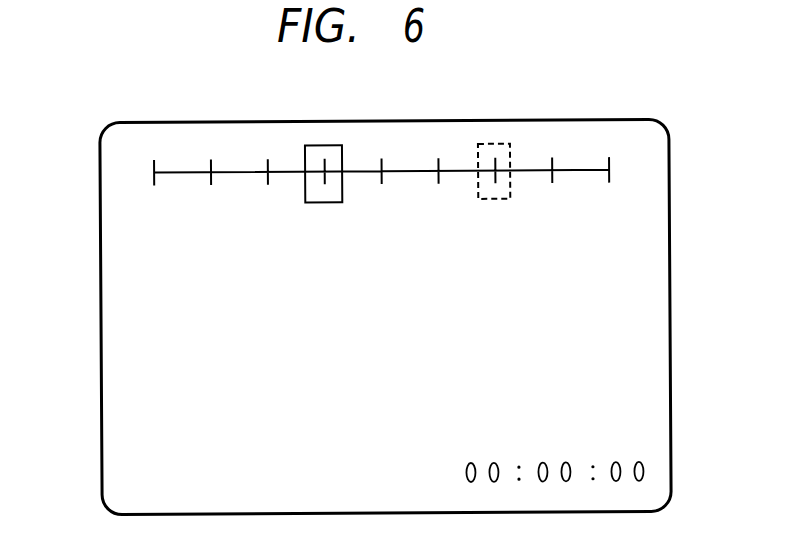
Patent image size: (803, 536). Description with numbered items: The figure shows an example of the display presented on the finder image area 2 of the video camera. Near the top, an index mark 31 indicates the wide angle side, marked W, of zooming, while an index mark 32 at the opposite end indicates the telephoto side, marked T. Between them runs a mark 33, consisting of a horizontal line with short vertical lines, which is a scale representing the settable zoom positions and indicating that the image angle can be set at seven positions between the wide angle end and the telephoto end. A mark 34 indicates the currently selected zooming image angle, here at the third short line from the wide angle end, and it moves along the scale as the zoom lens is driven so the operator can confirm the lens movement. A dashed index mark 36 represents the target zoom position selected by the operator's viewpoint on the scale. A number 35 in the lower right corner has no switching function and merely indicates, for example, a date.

The finder image area 2 is at (100, 442).
The index mark 31 is at (137, 157).
The index mark 32 is at (637, 152).
The mark 33 is at (193, 160).
The mark 34 is at (331, 145).
The number 35 is at (653, 473).
The index mark 36 is at (495, 200).